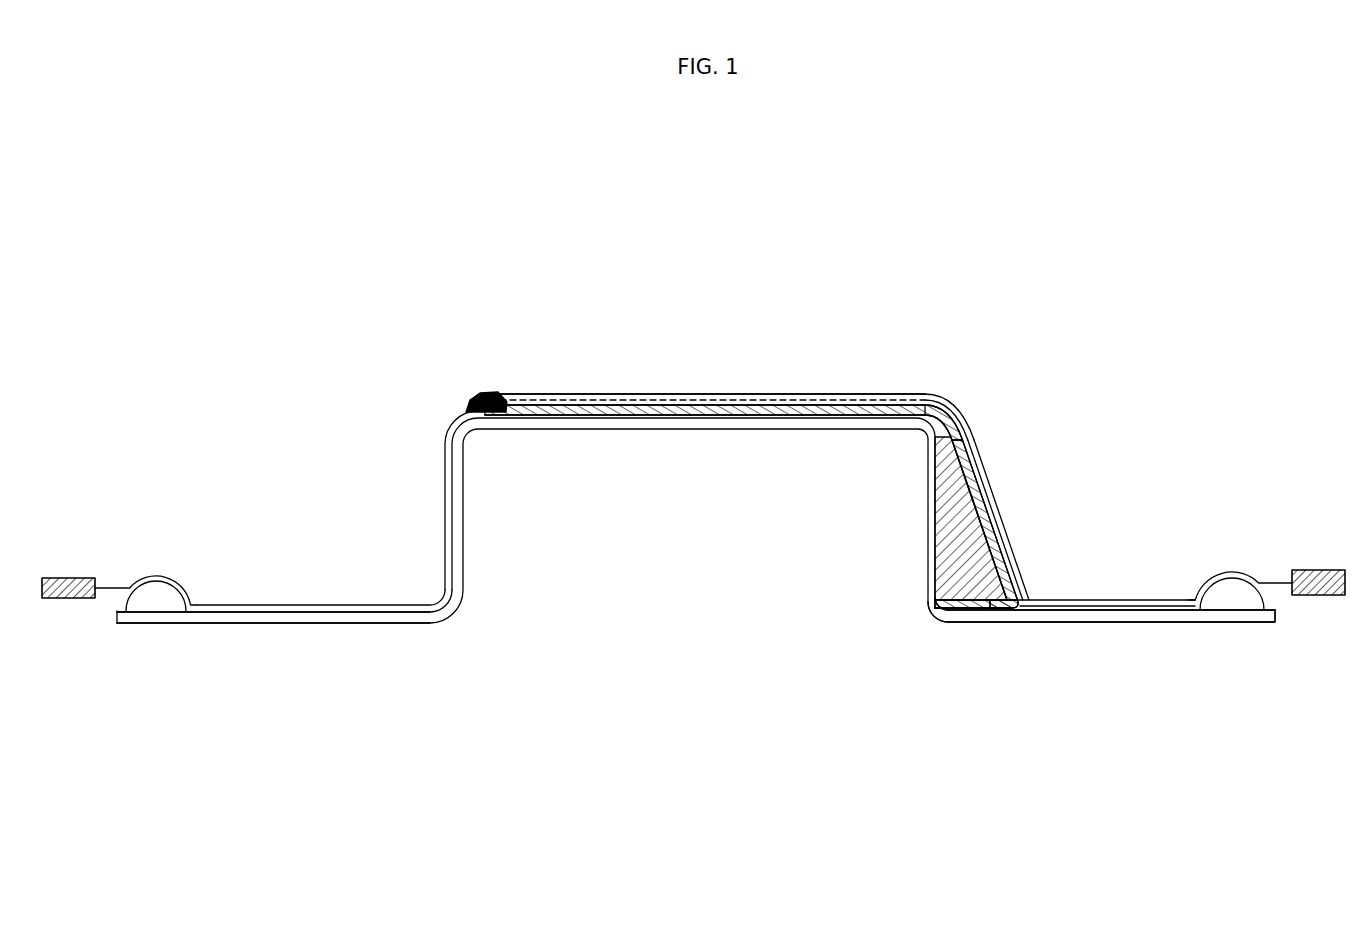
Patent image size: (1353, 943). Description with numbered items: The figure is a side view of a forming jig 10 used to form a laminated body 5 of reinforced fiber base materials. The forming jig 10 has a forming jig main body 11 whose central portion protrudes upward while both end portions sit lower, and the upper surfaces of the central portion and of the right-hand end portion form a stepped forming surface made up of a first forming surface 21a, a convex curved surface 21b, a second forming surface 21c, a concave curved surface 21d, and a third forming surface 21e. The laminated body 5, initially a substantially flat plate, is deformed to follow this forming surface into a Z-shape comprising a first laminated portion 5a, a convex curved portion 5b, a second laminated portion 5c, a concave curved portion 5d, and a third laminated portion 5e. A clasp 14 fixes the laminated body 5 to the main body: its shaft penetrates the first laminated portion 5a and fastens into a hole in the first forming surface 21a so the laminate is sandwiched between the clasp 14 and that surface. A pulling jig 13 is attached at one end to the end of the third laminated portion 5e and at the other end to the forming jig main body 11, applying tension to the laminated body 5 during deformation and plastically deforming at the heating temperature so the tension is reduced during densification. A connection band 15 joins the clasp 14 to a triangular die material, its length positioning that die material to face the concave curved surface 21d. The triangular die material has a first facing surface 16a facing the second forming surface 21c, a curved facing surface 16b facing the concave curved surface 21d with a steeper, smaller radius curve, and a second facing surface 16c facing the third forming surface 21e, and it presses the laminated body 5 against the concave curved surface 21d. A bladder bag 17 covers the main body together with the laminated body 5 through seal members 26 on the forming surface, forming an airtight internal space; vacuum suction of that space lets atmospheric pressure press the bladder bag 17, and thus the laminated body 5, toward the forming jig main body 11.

The forming jig 10 is at (531, 310).
The forming jig main body 11 is at (262, 628).
The pulling jig 13 is at (1193, 600).
The clasp 14 is at (487, 392).
The connection band 15 is at (591, 399).
The bladder bag 17 is at (862, 394).
The seal member 26 is at (156, 603).
The laminated body 5 is at (822, 401).
The first laminated portion 5a is at (640, 419).
The convex curved portion 5b is at (919, 398).
The second laminated portion 5c is at (955, 503).
The concave curved portion 5d is at (936, 616).
The third laminated portion 5e is at (1013, 609).
The first facing surface 16a is at (937, 462).
The curved facing surface 16b is at (933, 598).
The second facing surface 16c is at (1003, 612).
The first forming surface 21a is at (657, 404).
The convex curved surface 21b is at (944, 401).
The second forming surface 21c is at (968, 542).
The concave curved surface 21d is at (948, 624).
The third forming surface 21e is at (1012, 588).